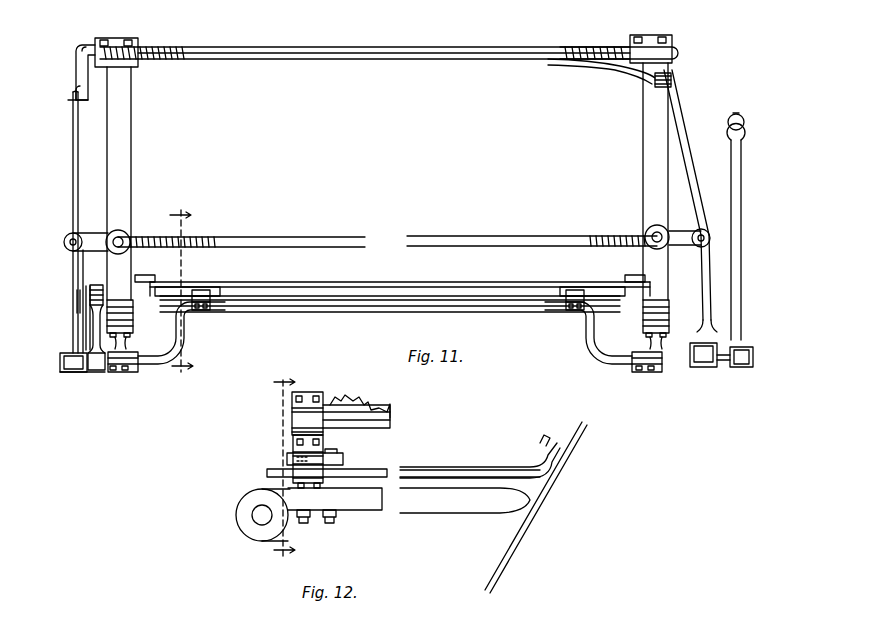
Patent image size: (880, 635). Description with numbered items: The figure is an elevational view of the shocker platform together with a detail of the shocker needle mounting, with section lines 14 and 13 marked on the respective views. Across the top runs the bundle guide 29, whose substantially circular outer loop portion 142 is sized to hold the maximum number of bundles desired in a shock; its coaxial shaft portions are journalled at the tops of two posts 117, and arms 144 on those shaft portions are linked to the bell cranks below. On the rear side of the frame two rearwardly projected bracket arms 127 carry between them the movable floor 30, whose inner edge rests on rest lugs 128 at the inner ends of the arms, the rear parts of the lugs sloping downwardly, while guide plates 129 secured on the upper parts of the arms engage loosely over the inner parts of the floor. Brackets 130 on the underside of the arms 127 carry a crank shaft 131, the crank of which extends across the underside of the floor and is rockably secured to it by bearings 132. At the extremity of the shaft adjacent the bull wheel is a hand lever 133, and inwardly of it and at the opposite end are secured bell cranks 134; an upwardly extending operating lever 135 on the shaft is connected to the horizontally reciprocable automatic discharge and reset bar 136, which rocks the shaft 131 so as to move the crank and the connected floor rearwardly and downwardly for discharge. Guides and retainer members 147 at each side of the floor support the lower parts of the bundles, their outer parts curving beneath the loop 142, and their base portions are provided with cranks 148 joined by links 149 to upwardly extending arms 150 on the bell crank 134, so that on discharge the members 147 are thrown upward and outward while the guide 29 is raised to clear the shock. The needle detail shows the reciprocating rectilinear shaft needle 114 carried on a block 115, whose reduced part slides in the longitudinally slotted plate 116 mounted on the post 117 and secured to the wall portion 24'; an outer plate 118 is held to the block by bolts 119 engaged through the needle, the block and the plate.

In FIG. 11, the bundle guide 29 is at (345, 60).
In FIG. 11, the outer loop portion 142 is at (430, 60).
In FIG. 11, the arms 144 is at (74, 70).
In FIG. 12, the arms 144 is at (362, 408).
In FIG. 11, the standard or post 117 is at (122, 128).
In FIG. 12, the standard or post 117 is at (288, 400).
In FIG. 11, the hand lever 133 is at (730, 192).
In FIG. 11, the guides and retainer members 147 is at (232, 237).
In FIG. 11, the cranks 148 is at (76, 229).
In FIG. 11, the links 149 is at (70, 270).
In FIG. 11, the automatic discharge and reset bar 136 is at (86, 290).
In FIG. 11, the operating lever 135 is at (94, 330).
In FIG. 11, the upwardly extending arms 150 is at (66, 344).
In FIG. 11, the bell cranks 134 is at (76, 378).
In FIG. 11, the bracket arms 127 is at (120, 330).
In FIG. 11, the brackets 130 is at (138, 372).
In FIG. 11, the crank shaft 131 is at (184, 358).
In FIG. 11, the movable floor 30 is at (356, 286).
In FIG. 11, the guide plates 129 is at (146, 278).
In FIG. 11, the rest lugs 128 is at (170, 296).
In FIG. 11, the bearings 132 is at (208, 312).
In FIG. 11, the section line 14 is at (191, 281).
In FIG. 12, the section line 13 is at (285, 470).
In FIG. 12, the outer plate 118 is at (286, 464).
In FIG. 12, the block 115 is at (266, 479).
In FIG. 12, the longitudinally slotted plate 116 is at (452, 467).
In FIG. 12, the shaft needle 114 is at (447, 510).
In FIG. 12, the bolts 119 is at (332, 520).
In FIG. 12, the wall portion 24' is at (536, 507).